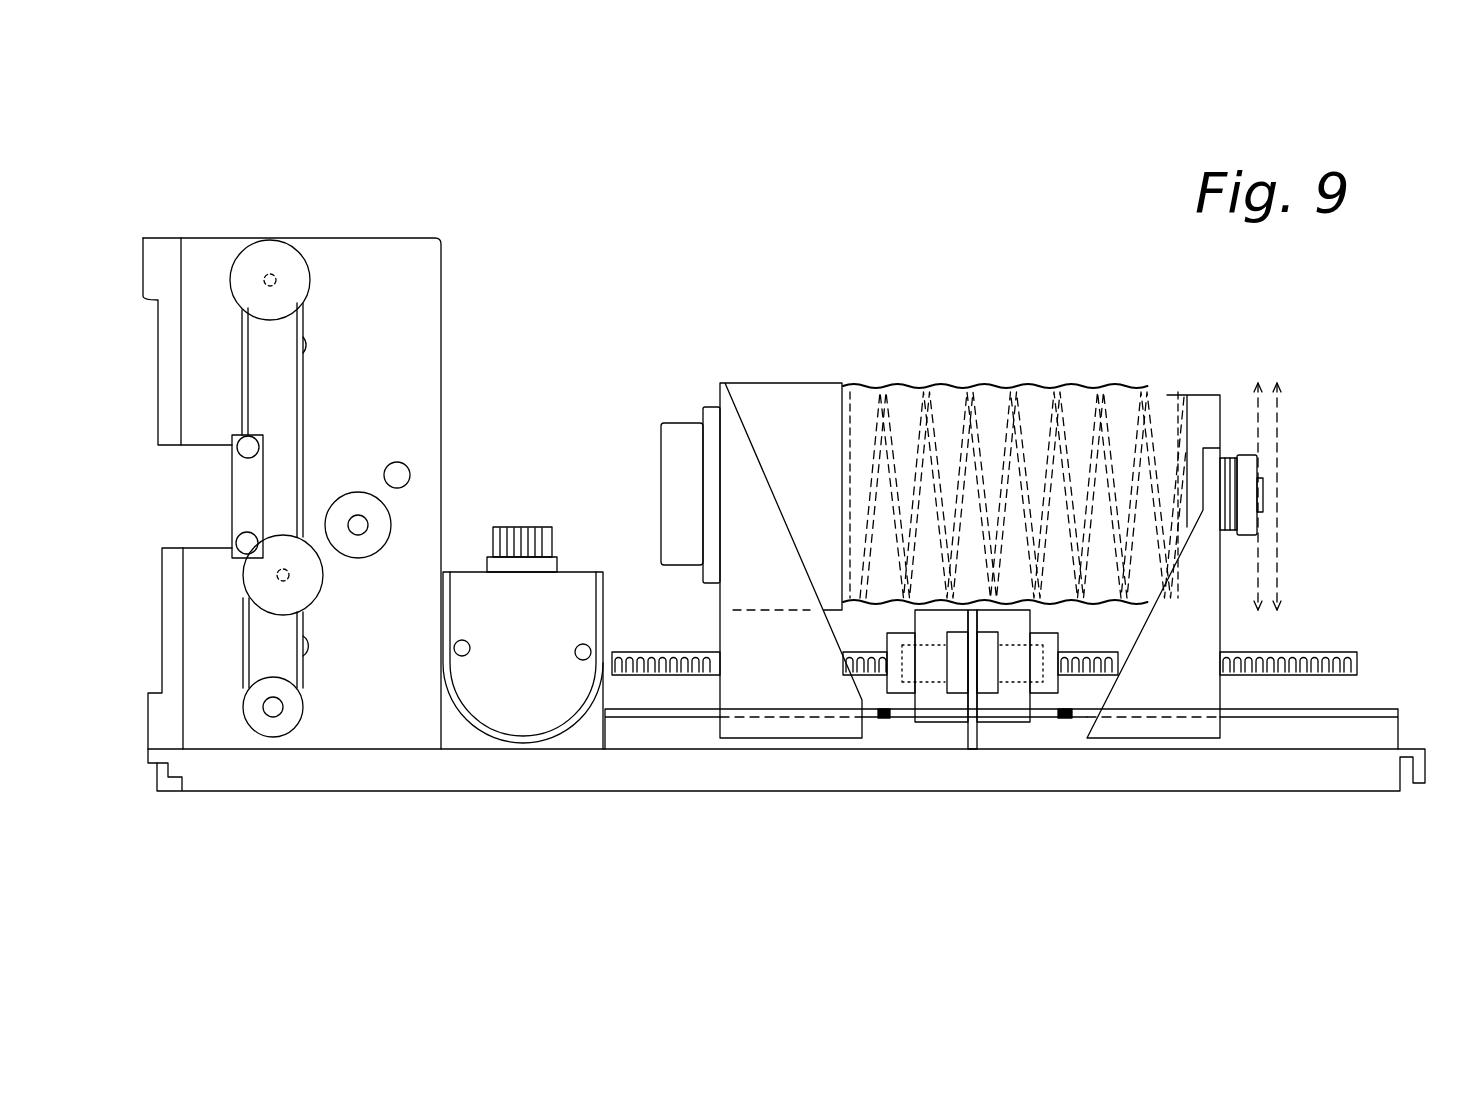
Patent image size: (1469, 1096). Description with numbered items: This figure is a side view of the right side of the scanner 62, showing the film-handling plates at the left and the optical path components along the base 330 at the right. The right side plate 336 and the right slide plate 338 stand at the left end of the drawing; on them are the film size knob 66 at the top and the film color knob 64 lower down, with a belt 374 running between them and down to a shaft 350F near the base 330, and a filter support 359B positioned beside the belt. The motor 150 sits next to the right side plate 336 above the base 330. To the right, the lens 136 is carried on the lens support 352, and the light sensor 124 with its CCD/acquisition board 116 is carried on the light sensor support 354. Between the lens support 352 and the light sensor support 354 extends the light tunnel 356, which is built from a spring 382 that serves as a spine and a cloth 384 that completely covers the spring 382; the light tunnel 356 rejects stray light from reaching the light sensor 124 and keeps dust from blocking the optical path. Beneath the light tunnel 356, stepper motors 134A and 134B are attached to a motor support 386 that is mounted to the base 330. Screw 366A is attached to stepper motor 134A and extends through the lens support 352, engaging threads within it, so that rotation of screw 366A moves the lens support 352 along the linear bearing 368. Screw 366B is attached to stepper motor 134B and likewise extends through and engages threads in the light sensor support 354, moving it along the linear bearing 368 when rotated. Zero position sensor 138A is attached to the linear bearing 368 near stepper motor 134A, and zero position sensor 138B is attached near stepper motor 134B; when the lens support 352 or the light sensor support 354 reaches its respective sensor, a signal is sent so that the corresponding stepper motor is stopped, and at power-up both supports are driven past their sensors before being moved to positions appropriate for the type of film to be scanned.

The scanner 62 is at (350, 132).
The right slide plate 338 is at (163, 246).
The right side plate 336 is at (441, 248).
The film size knob 66 is at (278, 258).
The belt 374 is at (305, 405).
The filter support 359B is at (243, 483).
The film color knob 64 is at (312, 582).
The shaft 350F is at (273, 712).
The base 330 is at (207, 773).
The motor 150 is at (517, 697).
The screw 366A is at (662, 677).
The screw 366B is at (1290, 646).
The linear bearing 368 is at (1353, 709).
The lens support 352 is at (790, 695).
The light sensor support 354 is at (1168, 685).
The lens 136 is at (680, 440).
The spring 382 is at (942, 400).
The cloth 384 is at (1030, 388).
The light tunnel 356 is at (1125, 366).
The light sensor 124 is at (1243, 455).
The CCD/acquisition board 116 is at (1283, 430).
The zero position sensor 138A is at (882, 723).
The stepper motor 134A is at (935, 707).
The motor support 386 is at (974, 750).
The stepper motor 134B is at (1002, 707).
The zero position sensor 138B is at (1070, 720).